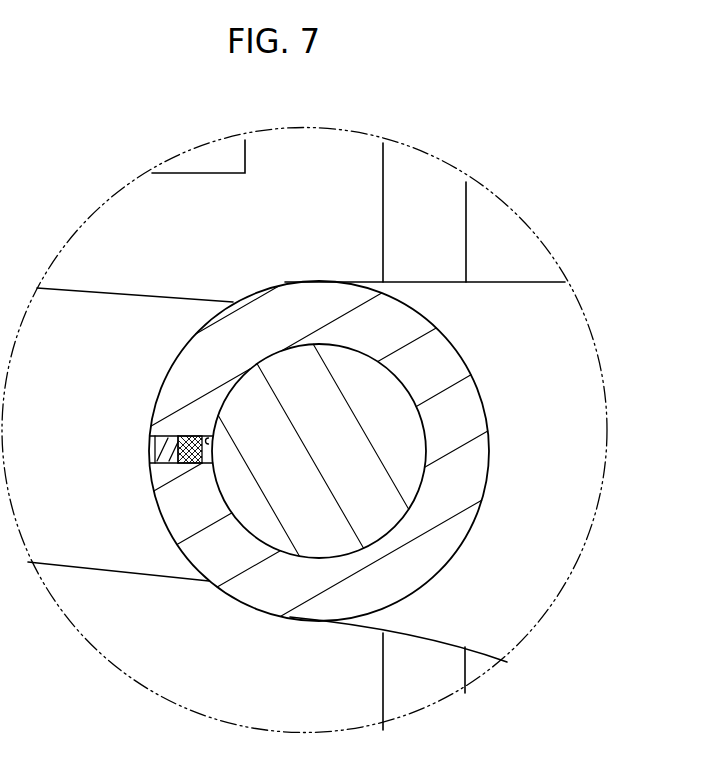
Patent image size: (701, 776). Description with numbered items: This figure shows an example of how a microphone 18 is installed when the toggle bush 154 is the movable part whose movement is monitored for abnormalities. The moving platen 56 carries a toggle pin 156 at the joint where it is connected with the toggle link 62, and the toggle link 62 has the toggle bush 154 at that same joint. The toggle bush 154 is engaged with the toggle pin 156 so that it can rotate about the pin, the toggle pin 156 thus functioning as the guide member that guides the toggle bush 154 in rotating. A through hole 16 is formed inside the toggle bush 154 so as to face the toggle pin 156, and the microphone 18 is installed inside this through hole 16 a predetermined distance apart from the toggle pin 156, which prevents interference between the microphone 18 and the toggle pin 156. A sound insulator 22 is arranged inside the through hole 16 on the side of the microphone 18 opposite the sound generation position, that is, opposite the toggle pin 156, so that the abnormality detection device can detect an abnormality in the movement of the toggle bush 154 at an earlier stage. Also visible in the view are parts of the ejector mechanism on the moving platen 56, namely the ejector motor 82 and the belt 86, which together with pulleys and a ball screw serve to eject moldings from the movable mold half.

The through hole 16 is at (212, 449).
The microphone 18 is at (198, 464).
The sound insulator 22 is at (163, 450).
The moving platen 56 is at (537, 317).
The toggle link 62 is at (97, 312).
The ejector motor 82 is at (213, 157).
The belt 86 is at (411, 206).
The toggle bush 154 is at (472, 477).
The toggle pin 156 is at (400, 432).